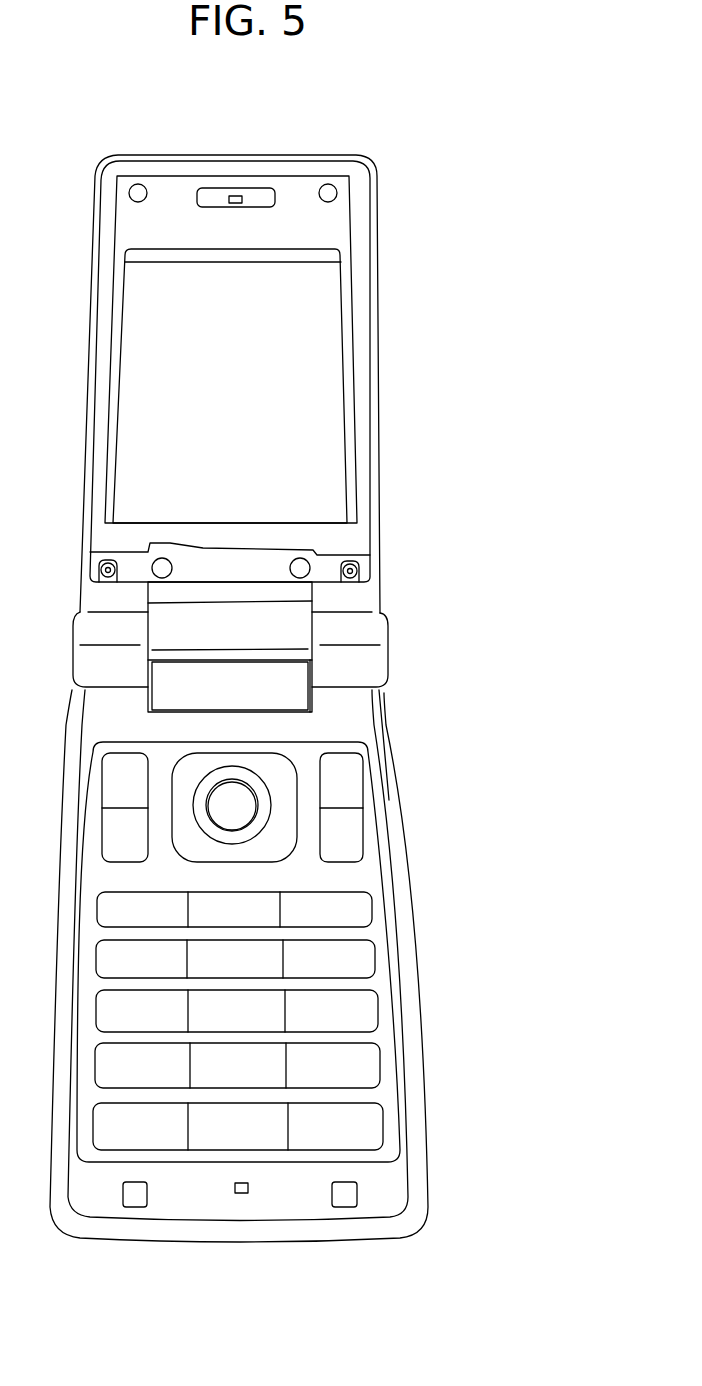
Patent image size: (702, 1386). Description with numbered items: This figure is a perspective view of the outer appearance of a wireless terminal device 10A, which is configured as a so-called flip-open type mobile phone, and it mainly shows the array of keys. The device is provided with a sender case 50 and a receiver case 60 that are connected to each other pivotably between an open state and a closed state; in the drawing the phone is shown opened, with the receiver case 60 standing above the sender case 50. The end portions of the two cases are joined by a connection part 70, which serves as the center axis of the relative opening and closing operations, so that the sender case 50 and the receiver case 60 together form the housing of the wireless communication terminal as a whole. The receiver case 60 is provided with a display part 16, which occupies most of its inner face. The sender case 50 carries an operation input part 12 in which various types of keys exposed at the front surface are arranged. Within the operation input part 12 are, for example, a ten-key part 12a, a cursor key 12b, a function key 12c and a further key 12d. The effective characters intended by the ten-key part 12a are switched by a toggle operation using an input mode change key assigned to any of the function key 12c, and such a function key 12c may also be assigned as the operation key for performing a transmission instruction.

The wireless terminal device 10A is at (262, 1337).
The display part 16 is at (330, 326).
The receiver case 60 is at (363, 400).
The connection part 70 is at (407, 657).
The sender case 50 is at (390, 883).
The operation input part 12 is at (382, 984).
The ten-key part 12a is at (365, 1123).
The cursor key 12b is at (282, 785).
The function key 12c is at (345, 763).
The side key 12d is at (347, 825).